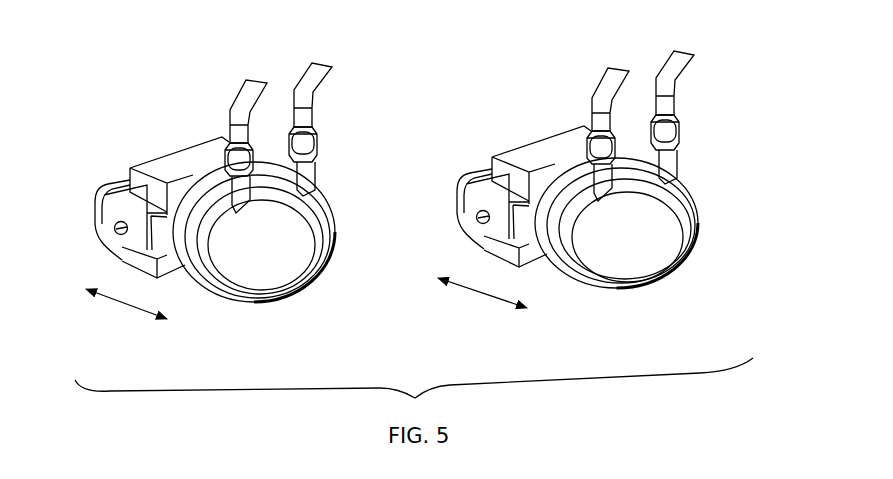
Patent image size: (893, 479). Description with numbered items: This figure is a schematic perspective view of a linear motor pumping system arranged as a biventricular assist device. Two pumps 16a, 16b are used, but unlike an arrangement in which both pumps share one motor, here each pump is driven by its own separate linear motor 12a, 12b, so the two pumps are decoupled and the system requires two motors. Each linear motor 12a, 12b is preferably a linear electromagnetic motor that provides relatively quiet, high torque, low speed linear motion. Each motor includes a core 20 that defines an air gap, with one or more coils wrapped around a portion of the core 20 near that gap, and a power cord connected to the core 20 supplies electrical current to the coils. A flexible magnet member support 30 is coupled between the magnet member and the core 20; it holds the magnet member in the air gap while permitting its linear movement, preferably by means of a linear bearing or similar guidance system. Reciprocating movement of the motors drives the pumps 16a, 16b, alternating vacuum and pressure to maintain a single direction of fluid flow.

The linear motor 12a is at (255, 188).
The linear motor 12b is at (596, 175).
The pump 16a is at (341, 160).
The pump 16b is at (692, 150).
The core 20 is at (188, 160).
The magnet member support 30 is at (158, 238).